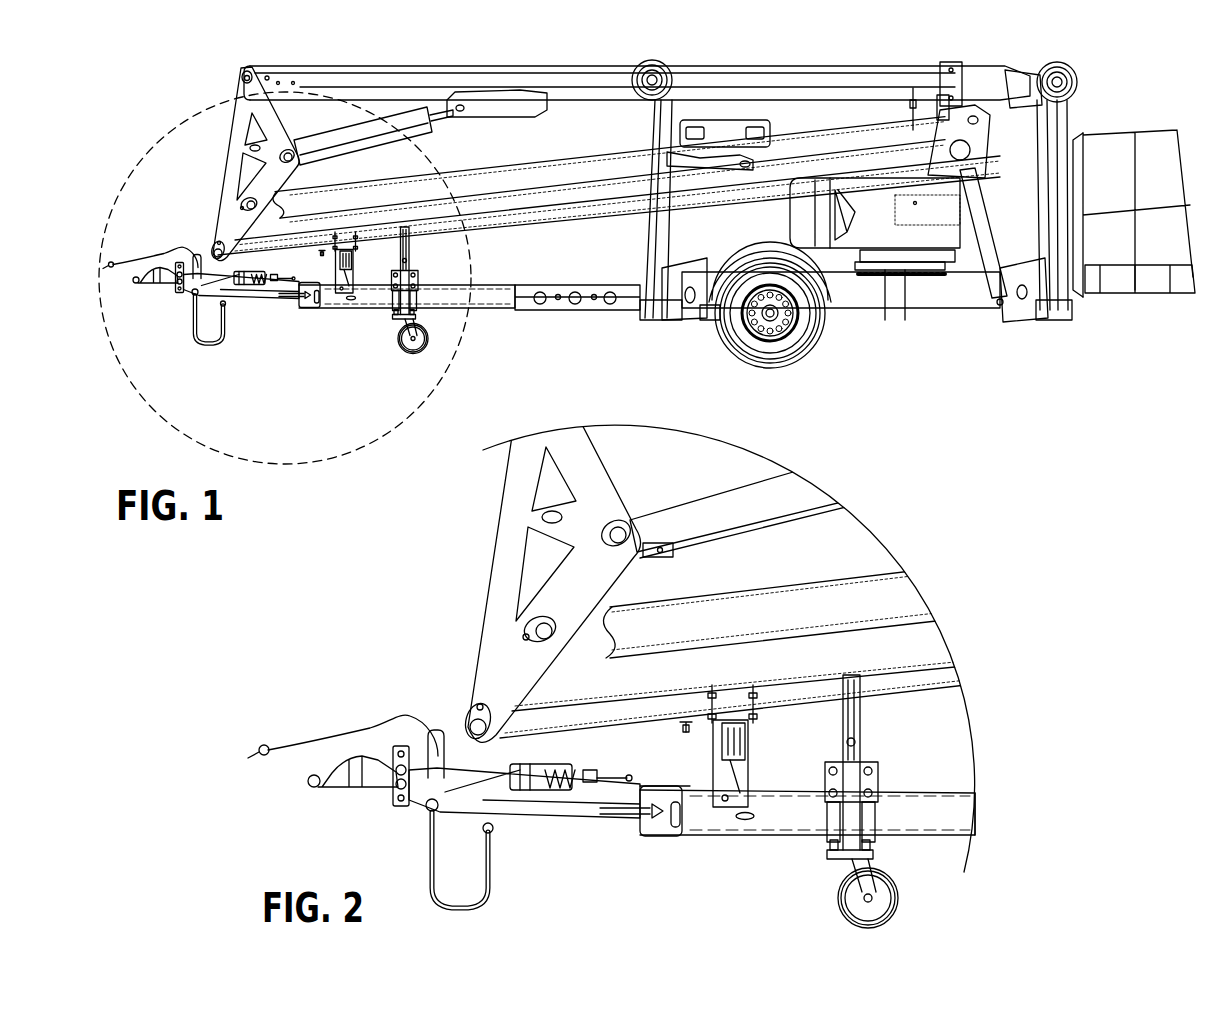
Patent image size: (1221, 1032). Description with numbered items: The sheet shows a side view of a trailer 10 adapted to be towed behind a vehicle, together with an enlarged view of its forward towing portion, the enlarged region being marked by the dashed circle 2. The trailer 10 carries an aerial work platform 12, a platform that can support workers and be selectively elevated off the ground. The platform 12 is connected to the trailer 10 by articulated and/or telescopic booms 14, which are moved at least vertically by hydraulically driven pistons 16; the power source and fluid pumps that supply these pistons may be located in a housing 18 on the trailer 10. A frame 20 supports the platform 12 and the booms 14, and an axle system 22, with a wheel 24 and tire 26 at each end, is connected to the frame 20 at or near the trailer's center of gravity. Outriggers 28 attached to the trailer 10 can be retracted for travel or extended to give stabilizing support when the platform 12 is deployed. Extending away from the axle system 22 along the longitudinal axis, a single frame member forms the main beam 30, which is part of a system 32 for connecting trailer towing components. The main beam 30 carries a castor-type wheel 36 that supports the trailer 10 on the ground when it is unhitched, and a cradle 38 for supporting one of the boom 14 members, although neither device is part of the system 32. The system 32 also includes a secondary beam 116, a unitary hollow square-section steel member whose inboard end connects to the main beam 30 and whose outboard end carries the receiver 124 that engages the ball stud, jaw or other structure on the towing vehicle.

In FIG. 1, the detail region shown in FIG. 2 is at (160, 150).
In FIG. 1, the trailer 10 is at (776, 66).
In FIG. 2, the trailer 10 is at (470, 582).
In FIG. 1, the aerial work platform 12 is at (1107, 121).
In FIG. 1, the booms 14 is at (563, 207).
In FIG. 2, the booms 14 is at (907, 602).
In FIG. 1, the hydraulically driven pistons 16 is at (418, 115).
In FIG. 2, the hydraulically driven pistons 16 is at (806, 498).
In FIG. 1, the housing 18 is at (934, 203).
In FIG. 1, the frame 20 is at (898, 322).
In FIG. 2, the frame 20 is at (933, 855).
In FIG. 1, the axle system 22 is at (695, 347).
In FIG. 1, the wheel 24 is at (760, 340).
In FIG. 1, the tire 26 is at (822, 337).
In FIG. 1, the outriggers 28 is at (655, 61).
In FIG. 1, the main beam 30 is at (490, 313).
In FIG. 2, the main beam 30 is at (773, 838).
In FIG. 1, the system for connecting trailer towing components 32 is at (309, 316).
In FIG. 2, the system for connecting trailer towing components 32 is at (645, 843).
In FIG. 1, the castor-type wheel 36 is at (395, 330).
In FIG. 2, the castor-type wheel 36 is at (829, 880).
In FIG. 1, the cradle 38 is at (328, 268).
In FIG. 2, the cradle 38 is at (688, 750).
In FIG. 1, the secondary beam 116 is at (260, 300).
In FIG. 2, the secondary beam 116 is at (575, 823).
In FIG. 1, the receiver 124 is at (160, 280).
In FIG. 2, the receiver 124 is at (350, 793).